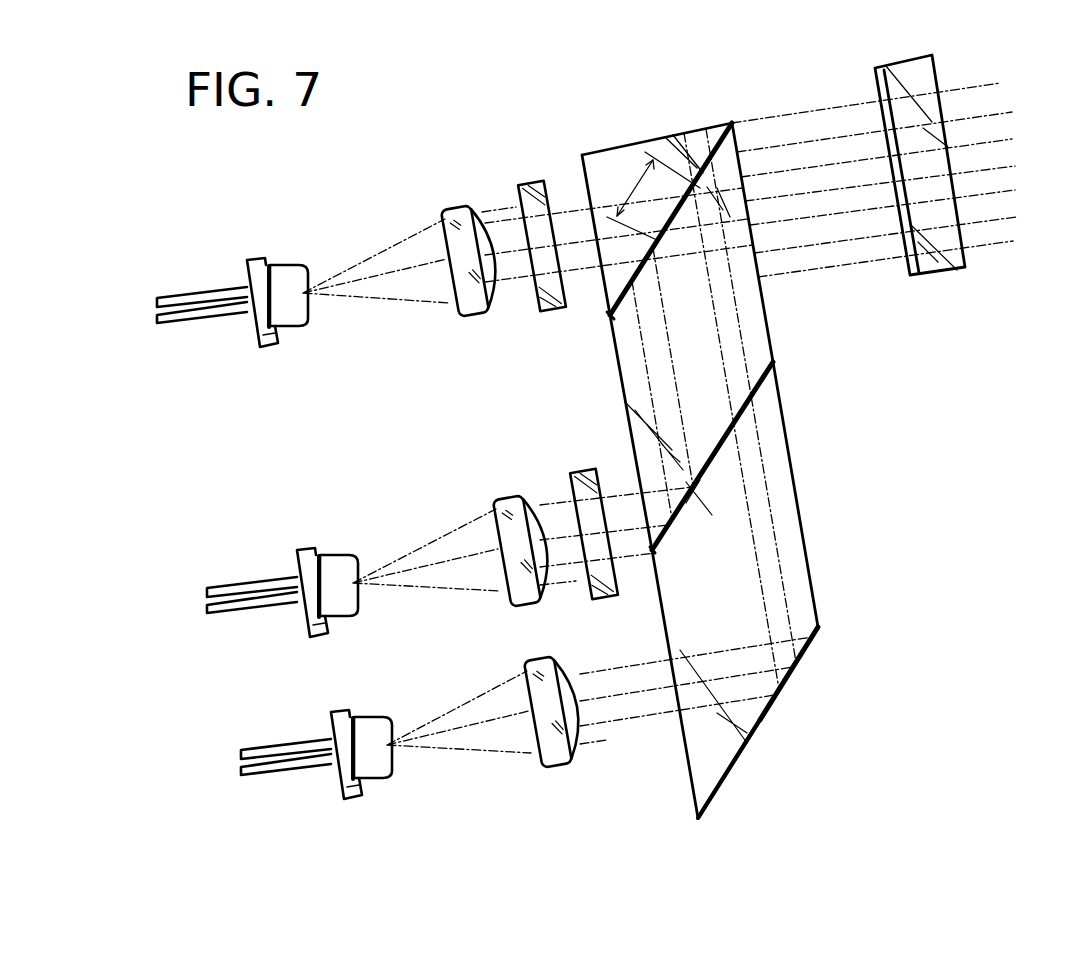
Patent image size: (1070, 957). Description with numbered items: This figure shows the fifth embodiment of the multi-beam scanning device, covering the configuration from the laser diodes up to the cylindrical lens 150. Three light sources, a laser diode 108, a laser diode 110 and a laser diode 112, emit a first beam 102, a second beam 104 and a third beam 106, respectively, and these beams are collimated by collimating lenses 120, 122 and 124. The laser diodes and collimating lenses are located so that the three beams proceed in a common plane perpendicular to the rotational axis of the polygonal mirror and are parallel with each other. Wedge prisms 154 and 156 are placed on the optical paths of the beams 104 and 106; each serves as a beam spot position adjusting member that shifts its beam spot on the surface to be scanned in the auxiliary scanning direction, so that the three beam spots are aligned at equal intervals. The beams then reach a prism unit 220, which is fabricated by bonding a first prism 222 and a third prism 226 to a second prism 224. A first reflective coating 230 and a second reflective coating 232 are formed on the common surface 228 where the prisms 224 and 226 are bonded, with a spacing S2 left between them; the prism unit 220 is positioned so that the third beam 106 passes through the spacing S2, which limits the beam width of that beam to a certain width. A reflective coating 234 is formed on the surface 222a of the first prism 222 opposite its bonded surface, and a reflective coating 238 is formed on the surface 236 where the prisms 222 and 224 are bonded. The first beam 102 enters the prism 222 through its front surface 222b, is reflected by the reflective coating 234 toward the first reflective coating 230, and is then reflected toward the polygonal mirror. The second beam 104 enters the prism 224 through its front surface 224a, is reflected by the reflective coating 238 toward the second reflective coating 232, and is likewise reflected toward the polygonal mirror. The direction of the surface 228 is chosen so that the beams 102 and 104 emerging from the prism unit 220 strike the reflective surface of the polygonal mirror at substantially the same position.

The first beam 102 is at (453, 706).
The second beam 104 is at (422, 546).
The third beam 106 is at (376, 252).
The laser diode 108 is at (332, 711).
The laser diode 110 is at (301, 548).
The laser diode 112 is at (256, 259).
The collimating lens 120 is at (540, 764).
The collimating lens 122 is at (493, 500).
The collimating lens 124 is at (450, 209).
The cylindrical lens 150 is at (925, 273).
The wedge prism 154 is at (571, 474).
The wedge prism 156 is at (520, 185).
The prism unit 220 is at (747, 446).
The first prism 222 is at (752, 706).
The surface 222a is at (735, 762).
The front surface 222b is at (680, 745).
The second prism 224 is at (760, 336).
The front surface 224a is at (622, 393).
The third prism 226 is at (590, 152).
The common surface 228 is at (673, 197).
The first reflective coating 230 is at (742, 132).
The second reflective coating 232 is at (612, 320).
The reflective coating 234 is at (818, 630).
The surface 236 is at (718, 452).
The reflective coating 238 is at (652, 556).
The spacing S2 is at (648, 196).